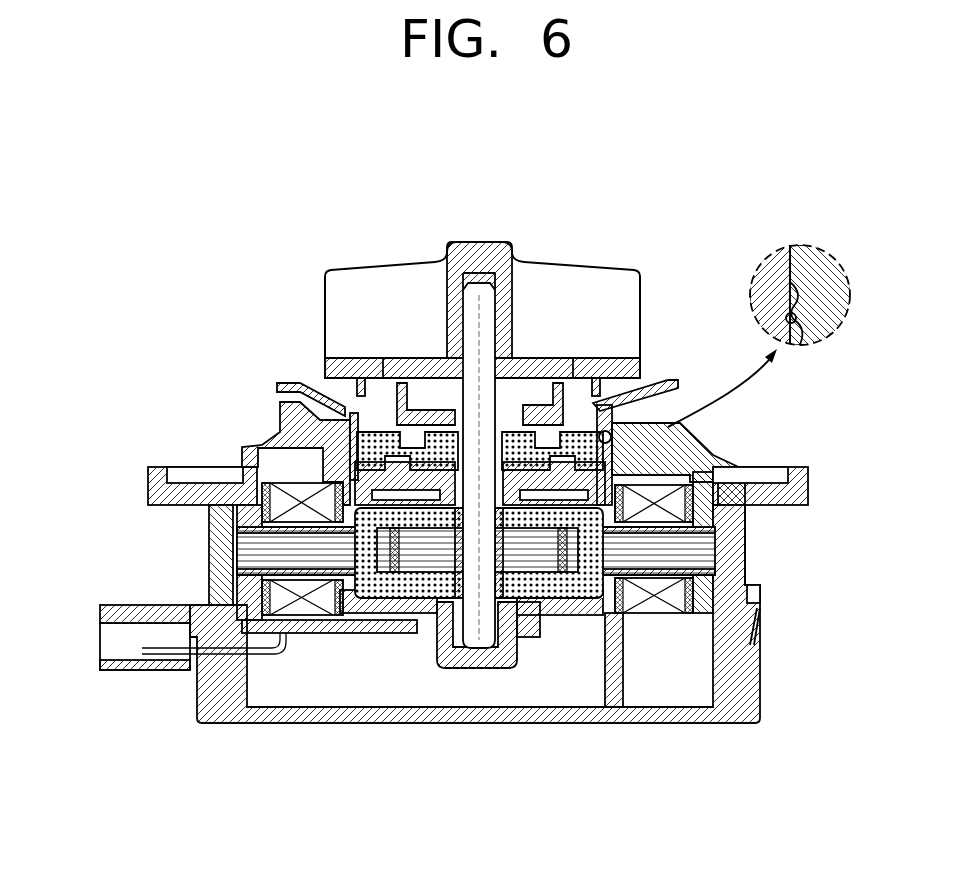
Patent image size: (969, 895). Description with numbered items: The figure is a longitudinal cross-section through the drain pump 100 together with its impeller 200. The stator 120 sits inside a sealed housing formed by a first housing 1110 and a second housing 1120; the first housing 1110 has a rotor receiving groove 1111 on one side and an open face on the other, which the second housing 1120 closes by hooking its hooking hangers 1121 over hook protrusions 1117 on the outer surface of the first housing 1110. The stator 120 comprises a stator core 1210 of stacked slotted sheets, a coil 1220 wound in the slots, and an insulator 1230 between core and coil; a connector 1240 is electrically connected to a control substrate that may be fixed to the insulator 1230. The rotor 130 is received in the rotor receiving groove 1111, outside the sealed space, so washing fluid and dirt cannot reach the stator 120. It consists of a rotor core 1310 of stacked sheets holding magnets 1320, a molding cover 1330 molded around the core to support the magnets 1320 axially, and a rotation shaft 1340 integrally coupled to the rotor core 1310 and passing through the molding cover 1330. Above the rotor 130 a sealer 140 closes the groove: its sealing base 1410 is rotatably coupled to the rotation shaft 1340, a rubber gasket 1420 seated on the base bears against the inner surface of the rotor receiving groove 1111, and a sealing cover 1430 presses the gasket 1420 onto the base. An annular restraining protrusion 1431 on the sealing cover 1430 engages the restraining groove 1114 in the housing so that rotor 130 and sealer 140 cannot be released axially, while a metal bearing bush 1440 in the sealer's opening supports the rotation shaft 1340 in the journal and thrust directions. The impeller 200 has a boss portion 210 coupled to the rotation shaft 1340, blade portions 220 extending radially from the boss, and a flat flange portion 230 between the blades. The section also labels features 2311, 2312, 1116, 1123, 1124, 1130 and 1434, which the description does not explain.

The drain pump 100 is at (445, 489).
The stator 120 is at (585, 510).
The rotor 130 is at (444, 688).
The sealer 140 is at (479, 346).
The impeller 200 is at (517, 285).
The boss portion 210 is at (480, 240).
The blade portions 220 is at (597, 285).
The flange portion 230 is at (628, 368).
The flange upper surface 2311 is at (595, 337).
The flange leg 2312 is at (605, 393).
The first housing 1110 is at (162, 483).
The rotor receiving groove 1111 is at (352, 483).
The restraining groove 1114 is at (808, 325).
The partition plate 1116 is at (488, 600).
The hook protrusions 1117 is at (760, 612).
The second housing 1120 is at (205, 700).
The hooking hangers 1121 is at (758, 595).
The housing boss 1123 is at (612, 660).
The housing side wall 1124 is at (728, 590).
The bearing cup 1130 is at (498, 620).
The stator core 1210 is at (708, 540).
The coil 1220 is at (663, 490).
The insulator 1230 is at (705, 515).
The connector 1240 is at (118, 612).
The rotor core 1310 is at (430, 558).
The magnets 1320 is at (393, 565).
The molding cover 1330 is at (372, 588).
The rotation shaft 1340 is at (470, 580).
The sealing base 1410 is at (352, 453).
The gasket 1420 is at (367, 430).
The sealing cover 1430 is at (390, 405).
The restraining protrusion 1431 is at (805, 260).
The cover plate right 1434 is at (550, 383).
The bearing bush 1440 is at (500, 485).